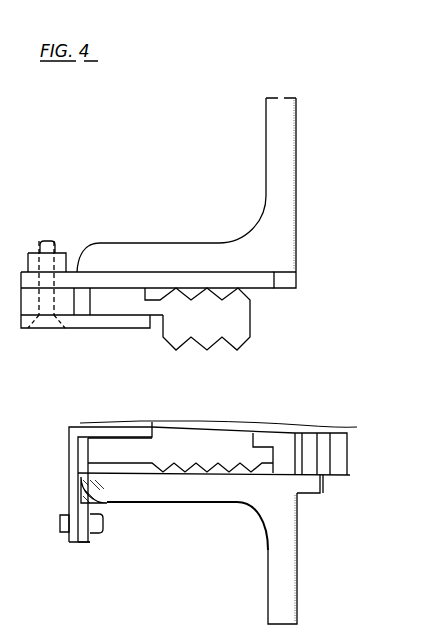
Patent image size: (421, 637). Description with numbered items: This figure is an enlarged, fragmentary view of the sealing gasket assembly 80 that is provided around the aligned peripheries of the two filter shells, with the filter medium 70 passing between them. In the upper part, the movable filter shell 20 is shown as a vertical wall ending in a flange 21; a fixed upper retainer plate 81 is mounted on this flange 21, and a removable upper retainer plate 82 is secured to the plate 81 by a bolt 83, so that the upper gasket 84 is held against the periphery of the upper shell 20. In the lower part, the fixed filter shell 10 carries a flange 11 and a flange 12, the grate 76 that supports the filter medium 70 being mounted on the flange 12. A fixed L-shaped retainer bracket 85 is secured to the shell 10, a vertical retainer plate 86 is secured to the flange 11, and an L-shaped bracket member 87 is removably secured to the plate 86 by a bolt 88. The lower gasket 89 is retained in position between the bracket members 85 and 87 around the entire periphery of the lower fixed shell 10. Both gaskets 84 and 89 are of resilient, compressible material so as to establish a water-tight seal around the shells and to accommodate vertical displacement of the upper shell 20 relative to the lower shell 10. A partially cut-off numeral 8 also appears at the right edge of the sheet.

The movable filter shell 20 is at (316, 118).
The flange 21 is at (163, 248).
The fixed upper retainer plate 81 is at (270, 280).
The removable upper retainer plate 82 is at (97, 323).
The bolt 83 is at (35, 255).
The upper gasket 84 is at (222, 327).
The sealing gasket assembly 80 is at (358, 322).
The reference numeral (cut off) 8 is at (414, 387).
The filter medium 70 is at (115, 422).
The L-shaped bracket member 87 is at (73, 463).
The lower gasket 89 is at (215, 452).
The flange 11 is at (197, 492).
The fixed L-shaped retainer bracket 85 is at (285, 433).
The grate 76 is at (347, 458).
The flange 12 is at (312, 487).
The fixed filter shell 10 is at (305, 582).
The bolt 88 is at (60, 528).
The vertical retainer plate 86 is at (84, 542).